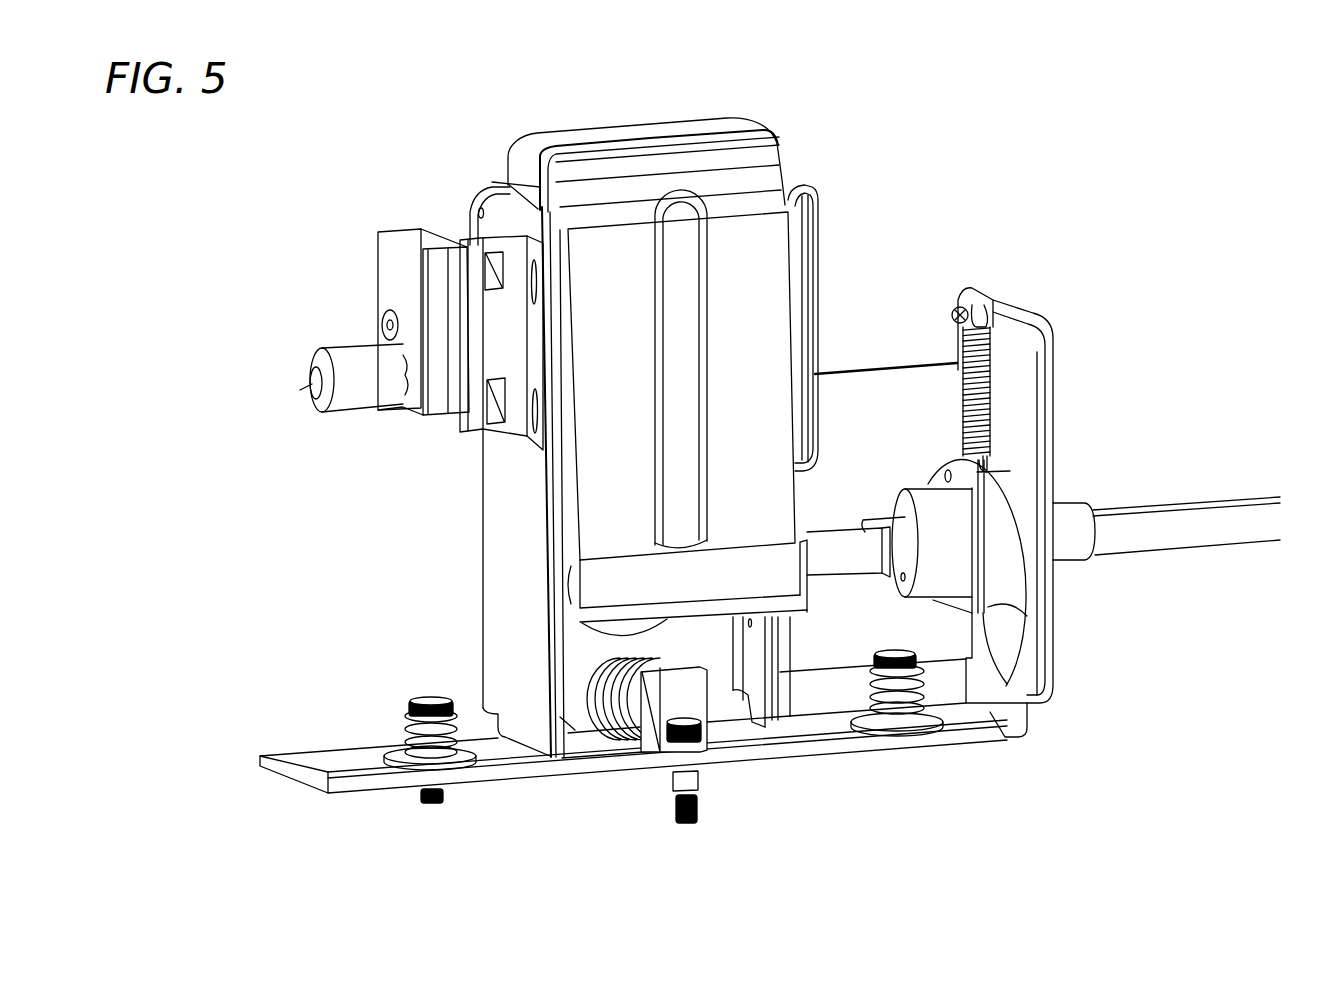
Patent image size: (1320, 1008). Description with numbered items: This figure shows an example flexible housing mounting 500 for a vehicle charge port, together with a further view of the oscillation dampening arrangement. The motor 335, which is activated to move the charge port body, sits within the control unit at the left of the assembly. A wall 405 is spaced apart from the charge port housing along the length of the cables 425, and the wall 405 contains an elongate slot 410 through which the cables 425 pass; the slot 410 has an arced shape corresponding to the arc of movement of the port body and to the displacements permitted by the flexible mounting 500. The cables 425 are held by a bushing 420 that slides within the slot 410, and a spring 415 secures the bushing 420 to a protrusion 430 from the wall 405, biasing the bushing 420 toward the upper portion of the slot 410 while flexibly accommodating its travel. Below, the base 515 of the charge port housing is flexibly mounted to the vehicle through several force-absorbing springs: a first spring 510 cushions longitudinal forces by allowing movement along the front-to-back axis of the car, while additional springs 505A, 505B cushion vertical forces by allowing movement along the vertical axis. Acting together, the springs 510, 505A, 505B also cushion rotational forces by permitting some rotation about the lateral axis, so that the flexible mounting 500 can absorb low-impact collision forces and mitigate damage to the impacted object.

The flexible housing mounting 500 is at (353, 607).
The motor 335 is at (365, 390).
The wall 405 is at (1025, 333).
The elongate slot 410 is at (1027, 665).
The spring 415 is at (980, 428).
The bushing 420 is at (1018, 613).
The cables 425 is at (1165, 520).
The protrusion 430 is at (963, 287).
The spring 505A is at (897, 700).
The spring 505B is at (450, 745).
The first spring 510 is at (628, 738).
The base 515 is at (792, 733).